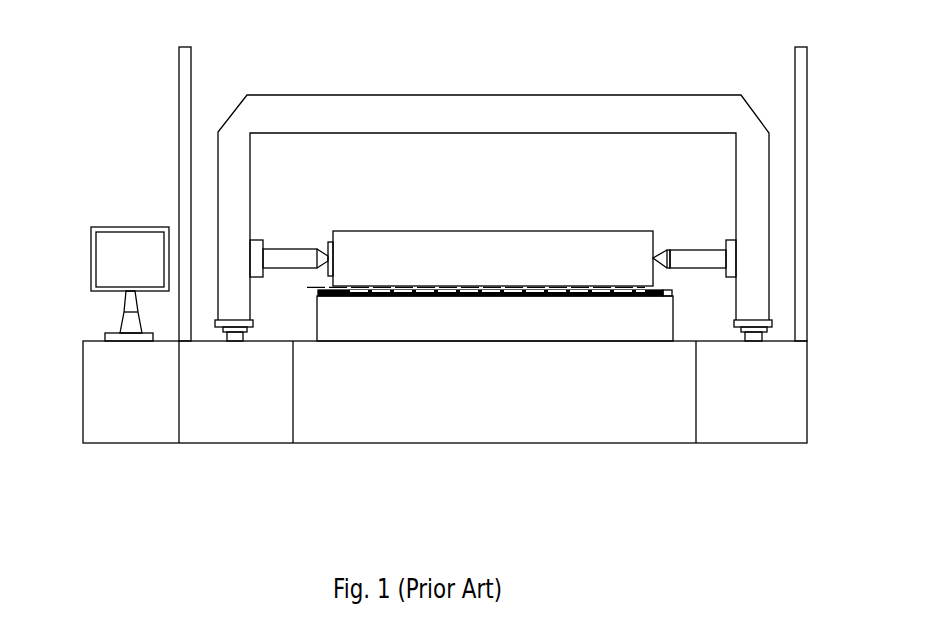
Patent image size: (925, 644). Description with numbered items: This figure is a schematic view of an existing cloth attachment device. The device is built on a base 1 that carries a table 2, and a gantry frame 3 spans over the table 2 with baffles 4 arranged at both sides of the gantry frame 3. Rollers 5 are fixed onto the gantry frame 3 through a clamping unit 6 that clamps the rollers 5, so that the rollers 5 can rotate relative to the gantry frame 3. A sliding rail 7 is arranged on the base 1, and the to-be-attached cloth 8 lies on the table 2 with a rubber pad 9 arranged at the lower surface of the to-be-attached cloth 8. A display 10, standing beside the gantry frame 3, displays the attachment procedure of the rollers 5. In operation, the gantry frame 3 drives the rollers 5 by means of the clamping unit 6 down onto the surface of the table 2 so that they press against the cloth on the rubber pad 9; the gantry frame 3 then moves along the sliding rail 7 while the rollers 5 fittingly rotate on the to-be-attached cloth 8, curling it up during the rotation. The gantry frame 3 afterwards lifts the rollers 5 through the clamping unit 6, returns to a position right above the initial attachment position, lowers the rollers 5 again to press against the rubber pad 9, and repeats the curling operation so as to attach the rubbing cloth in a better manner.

The base 1 is at (445, 422).
The table 2 is at (495, 346).
The gantry frame 3 is at (492, 200).
The baffles 4 is at (493, 194).
The rollers 5 is at (493, 231).
The clamping unit 6 is at (686, 230).
The sliding rail 7 is at (766, 356).
The to-be-attached cloth 8 is at (472, 292).
The rubber pad 9 is at (688, 316).
The display 10 is at (97, 260).